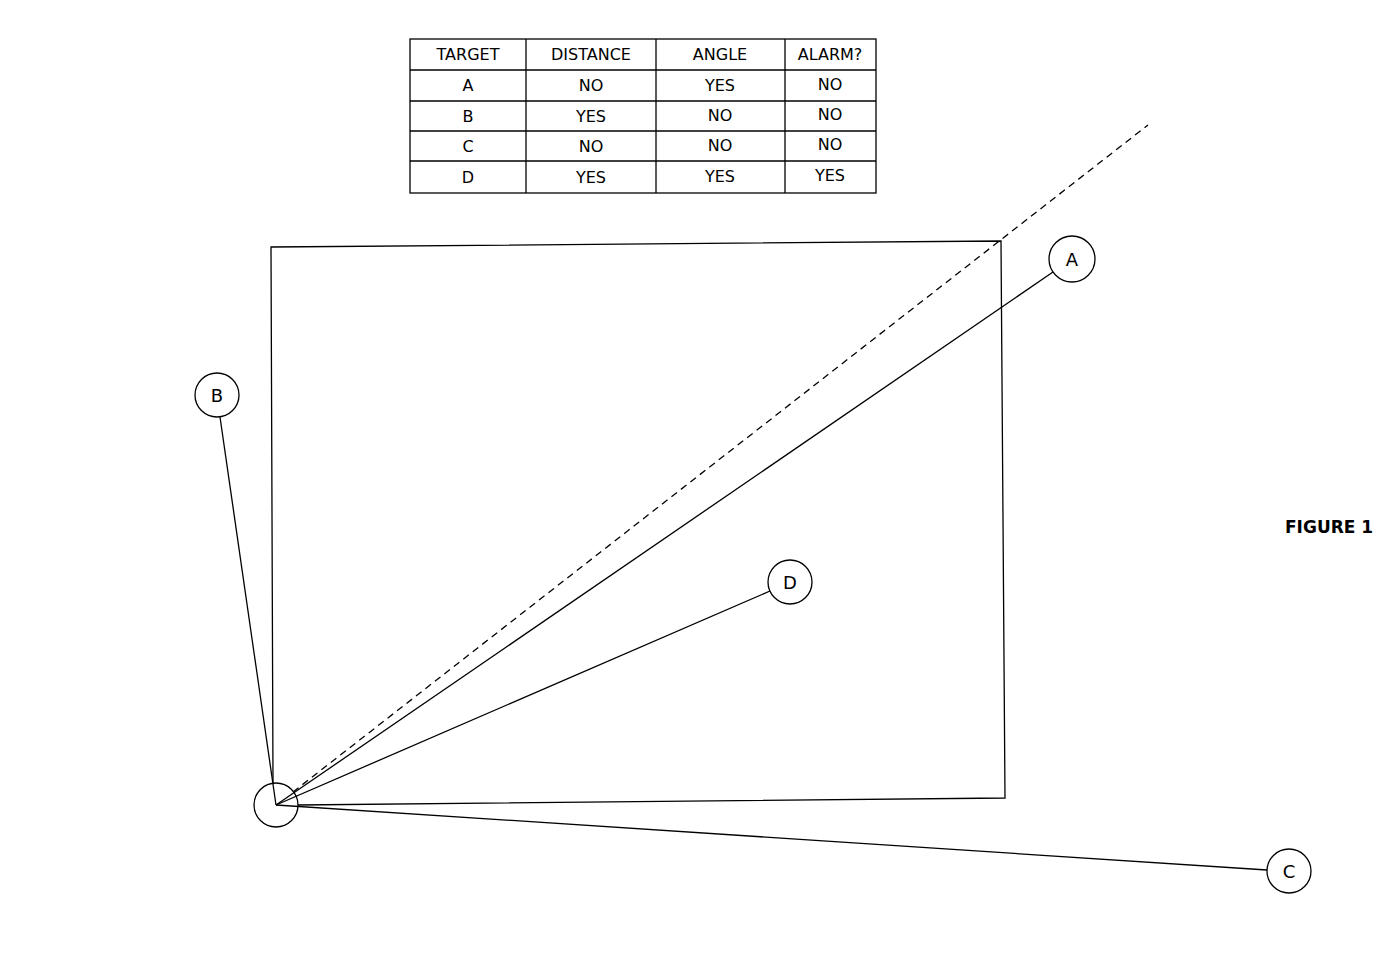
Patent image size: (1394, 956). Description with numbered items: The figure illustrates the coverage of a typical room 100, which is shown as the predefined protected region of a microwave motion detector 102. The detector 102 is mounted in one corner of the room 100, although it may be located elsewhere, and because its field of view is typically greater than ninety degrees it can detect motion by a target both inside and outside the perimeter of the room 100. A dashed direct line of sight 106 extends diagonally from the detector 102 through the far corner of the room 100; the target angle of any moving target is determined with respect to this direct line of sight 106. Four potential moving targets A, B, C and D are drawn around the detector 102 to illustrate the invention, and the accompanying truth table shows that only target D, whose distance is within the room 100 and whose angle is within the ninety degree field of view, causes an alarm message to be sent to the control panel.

The room 100 is at (992, 660).
The microwave motion detector 102 is at (287, 820).
The direct line of sight 106 is at (1071, 186).